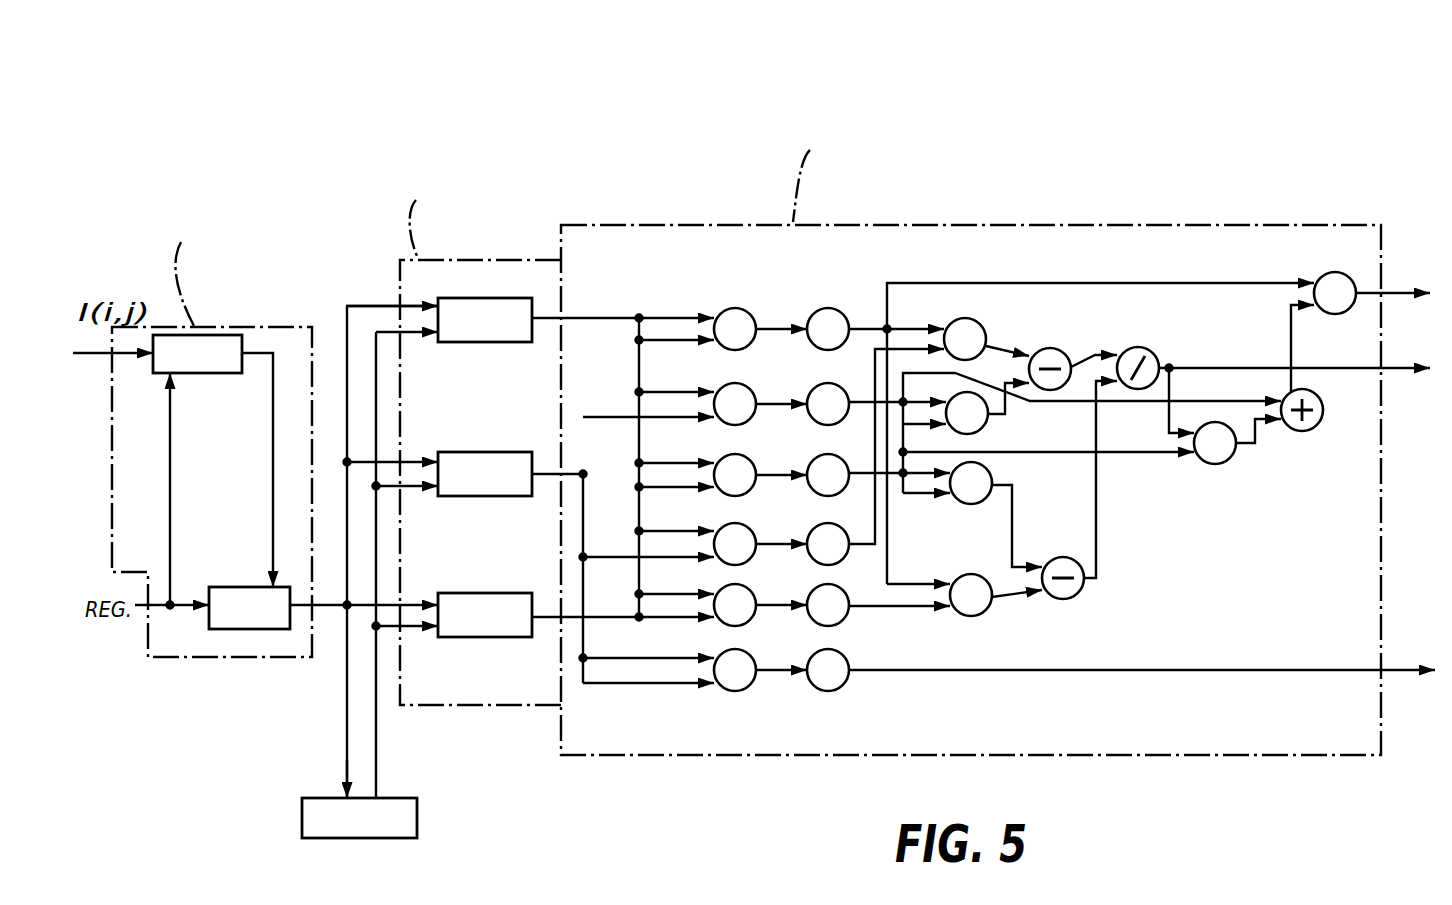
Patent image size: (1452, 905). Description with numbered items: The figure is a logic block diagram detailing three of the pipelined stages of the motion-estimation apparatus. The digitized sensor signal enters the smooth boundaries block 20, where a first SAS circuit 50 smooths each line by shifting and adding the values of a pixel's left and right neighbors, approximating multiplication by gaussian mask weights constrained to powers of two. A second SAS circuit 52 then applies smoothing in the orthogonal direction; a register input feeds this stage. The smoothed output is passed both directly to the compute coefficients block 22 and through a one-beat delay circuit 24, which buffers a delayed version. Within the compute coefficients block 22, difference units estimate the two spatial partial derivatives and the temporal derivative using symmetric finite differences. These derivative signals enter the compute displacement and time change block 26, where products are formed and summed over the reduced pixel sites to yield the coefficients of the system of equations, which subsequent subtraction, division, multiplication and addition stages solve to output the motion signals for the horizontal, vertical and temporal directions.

The smooth boundaries block 20 is at (233, 434).
The compute coefficients block 22 is at (487, 258).
The delay circuit 24 is at (302, 818).
The compute displacement and time change block 26 is at (1311, 223).
The SAS circuit 50 is at (213, 374).
The SAS circuit 52 is at (232, 587).